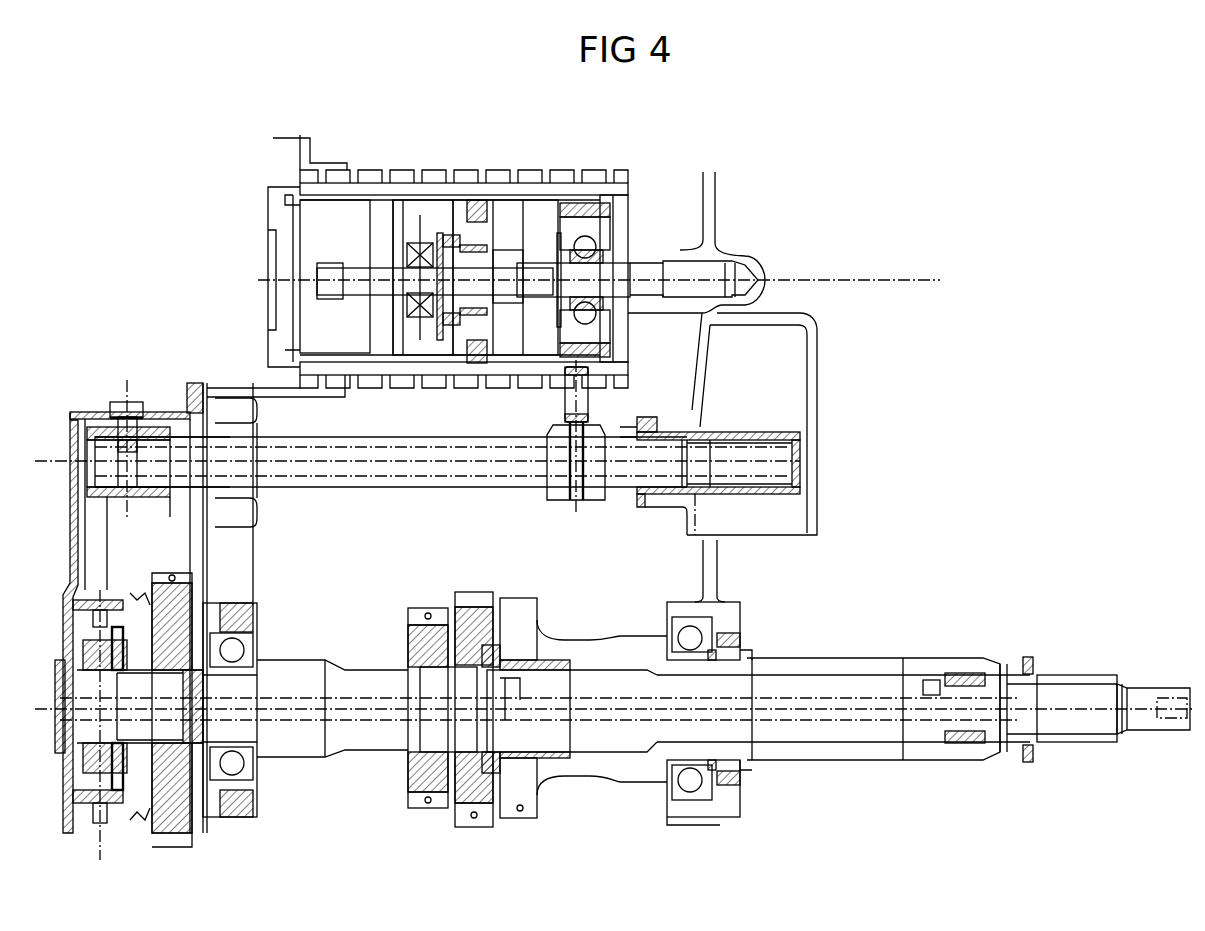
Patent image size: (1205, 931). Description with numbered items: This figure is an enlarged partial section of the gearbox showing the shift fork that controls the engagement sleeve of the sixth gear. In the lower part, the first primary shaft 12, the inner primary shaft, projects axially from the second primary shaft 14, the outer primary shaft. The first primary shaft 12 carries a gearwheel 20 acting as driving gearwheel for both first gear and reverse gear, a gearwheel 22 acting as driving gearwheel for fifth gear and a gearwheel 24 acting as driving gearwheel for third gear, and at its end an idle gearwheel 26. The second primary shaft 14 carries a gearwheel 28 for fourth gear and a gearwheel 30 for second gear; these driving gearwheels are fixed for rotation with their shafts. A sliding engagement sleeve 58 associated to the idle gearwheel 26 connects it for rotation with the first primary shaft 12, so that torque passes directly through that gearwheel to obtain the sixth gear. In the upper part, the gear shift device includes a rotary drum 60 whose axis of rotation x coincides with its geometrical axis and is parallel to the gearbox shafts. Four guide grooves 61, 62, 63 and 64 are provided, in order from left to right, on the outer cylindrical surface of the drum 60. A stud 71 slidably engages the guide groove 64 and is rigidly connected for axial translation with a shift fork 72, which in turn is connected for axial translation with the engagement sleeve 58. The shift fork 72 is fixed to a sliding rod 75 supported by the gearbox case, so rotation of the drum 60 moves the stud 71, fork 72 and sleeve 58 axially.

The first primary shaft 12 is at (360, 670).
The second primary shaft 14 is at (832, 760).
The gearwheel 20 is at (290, 758).
The gearwheel 22 is at (480, 826).
The gearwheel 24 is at (418, 808).
The idle gearwheel 26 is at (175, 835).
The gearwheel 28 is at (513, 820).
The gearwheel 30 is at (665, 790).
The sliding engagement sleeve 58 is at (95, 815).
The rotary drum 60 is at (623, 170).
The guide groove 61 is at (393, 170).
The guide groove 62 is at (445, 170).
The guide groove 63 is at (521, 170).
The guide groove 64 is at (575, 170).
The stud 71 is at (600, 404).
The shift fork 72 is at (103, 546).
The sliding rod 75 is at (495, 488).
The axis of rotation x is at (830, 268).